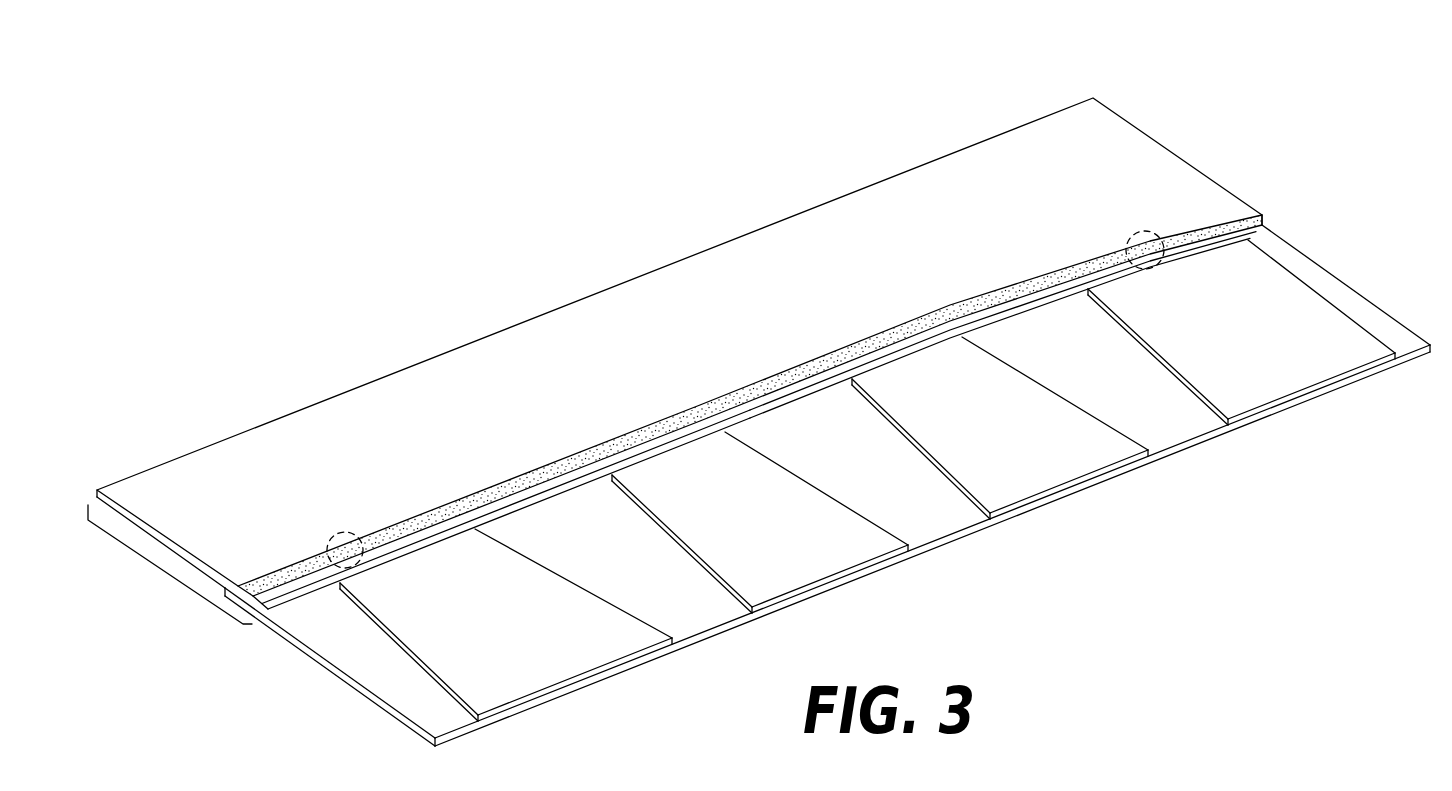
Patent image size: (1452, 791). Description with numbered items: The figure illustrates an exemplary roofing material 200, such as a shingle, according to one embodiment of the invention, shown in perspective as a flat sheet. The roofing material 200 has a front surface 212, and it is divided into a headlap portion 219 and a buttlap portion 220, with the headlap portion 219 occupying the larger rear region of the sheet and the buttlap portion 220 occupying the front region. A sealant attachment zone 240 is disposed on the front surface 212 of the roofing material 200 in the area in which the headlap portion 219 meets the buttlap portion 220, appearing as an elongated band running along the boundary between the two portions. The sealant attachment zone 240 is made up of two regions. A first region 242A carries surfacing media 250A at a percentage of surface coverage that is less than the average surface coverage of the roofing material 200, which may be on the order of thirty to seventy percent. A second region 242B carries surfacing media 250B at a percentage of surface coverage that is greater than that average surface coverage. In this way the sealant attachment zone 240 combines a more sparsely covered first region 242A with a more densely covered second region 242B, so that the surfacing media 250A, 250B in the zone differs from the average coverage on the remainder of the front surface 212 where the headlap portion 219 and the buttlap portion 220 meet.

The roofing material 200 is at (759, 399).
The front surface 212 is at (1128, 148).
The headlap portion 219 is at (158, 567).
The buttlap portion 220 is at (1313, 262).
The sealant attachment zone 240 is at (686, 403).
The first region 242A is at (425, 525).
The second region 242B is at (1000, 303).
The surfacing media 250A is at (346, 578).
The surfacing media 250B is at (1155, 238).